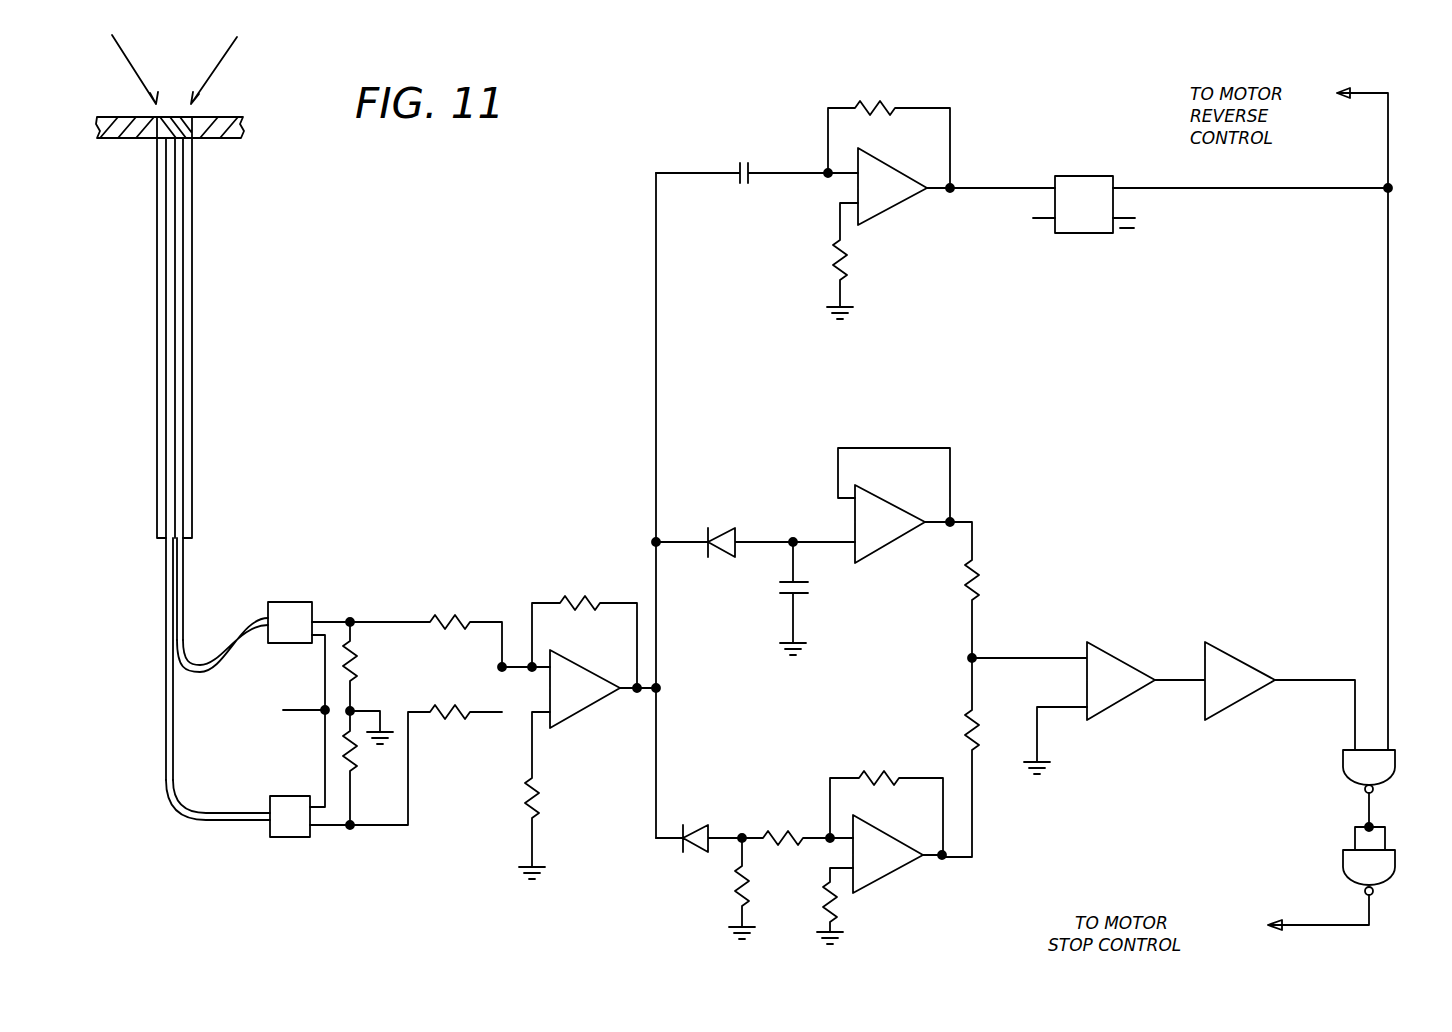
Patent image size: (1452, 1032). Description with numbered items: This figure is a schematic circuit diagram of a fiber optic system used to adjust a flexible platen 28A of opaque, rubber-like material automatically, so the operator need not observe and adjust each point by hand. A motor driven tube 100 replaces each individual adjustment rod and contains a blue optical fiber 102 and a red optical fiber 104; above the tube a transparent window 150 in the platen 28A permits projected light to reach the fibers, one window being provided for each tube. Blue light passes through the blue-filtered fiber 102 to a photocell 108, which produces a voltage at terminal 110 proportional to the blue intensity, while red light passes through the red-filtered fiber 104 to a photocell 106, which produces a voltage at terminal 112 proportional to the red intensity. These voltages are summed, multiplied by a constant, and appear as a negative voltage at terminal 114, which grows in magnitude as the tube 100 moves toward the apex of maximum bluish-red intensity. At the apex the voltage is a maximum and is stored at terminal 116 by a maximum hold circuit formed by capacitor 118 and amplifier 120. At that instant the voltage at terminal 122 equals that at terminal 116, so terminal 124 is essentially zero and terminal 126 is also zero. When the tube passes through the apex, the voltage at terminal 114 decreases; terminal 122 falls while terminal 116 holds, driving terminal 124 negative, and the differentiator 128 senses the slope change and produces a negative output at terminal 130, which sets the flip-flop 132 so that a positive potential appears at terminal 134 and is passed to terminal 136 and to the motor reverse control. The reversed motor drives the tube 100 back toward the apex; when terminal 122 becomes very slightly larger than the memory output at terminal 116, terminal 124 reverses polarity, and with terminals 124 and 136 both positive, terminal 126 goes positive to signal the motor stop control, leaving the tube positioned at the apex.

The flexible platen 28A is at (218, 126).
The transparent window 150 is at (195, 138).
The motor driven tube 100 is at (164, 320).
The blue optical fiber 102 is at (180, 410).
The red optical fiber 104 is at (170, 431).
The photocell 106 is at (296, 836).
The photocell 108 is at (297, 612).
The terminal 110 is at (354, 619).
The terminal 112 is at (352, 829).
The terminal 114 is at (660, 690).
The terminal 116 is at (957, 521).
The capacitor 118 is at (790, 593).
The amplifier 120 is at (908, 537).
The terminal 122 is at (945, 860).
The terminal 124 is at (1350, 748).
The terminal 126 is at (1364, 893).
The differentiator 128 is at (894, 178).
The terminal 130 is at (955, 185).
The flip-flop 132 is at (1085, 234).
The terminal 134 is at (1118, 187).
The terminal 136 is at (1389, 752).